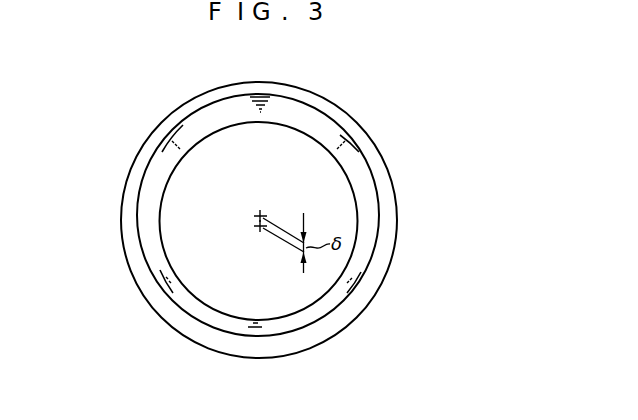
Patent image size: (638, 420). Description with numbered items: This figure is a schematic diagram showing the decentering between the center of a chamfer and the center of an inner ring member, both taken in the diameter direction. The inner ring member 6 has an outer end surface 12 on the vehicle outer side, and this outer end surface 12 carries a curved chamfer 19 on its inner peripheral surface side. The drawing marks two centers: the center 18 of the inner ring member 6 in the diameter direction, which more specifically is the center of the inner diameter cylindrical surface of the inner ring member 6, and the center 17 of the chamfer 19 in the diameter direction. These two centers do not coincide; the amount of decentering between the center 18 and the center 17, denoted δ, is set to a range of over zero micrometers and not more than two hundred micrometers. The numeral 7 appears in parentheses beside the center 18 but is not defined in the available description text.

The inner ring member 6 is at (128, 167).
The outer end surface 12 is at (390, 182).
The curved chamfer 19 is at (338, 126).
The inner member 7 is at (259, 221).
The center of the chamfer 17 is at (263, 217).
The center of the inner ring member 18 is at (258, 227).